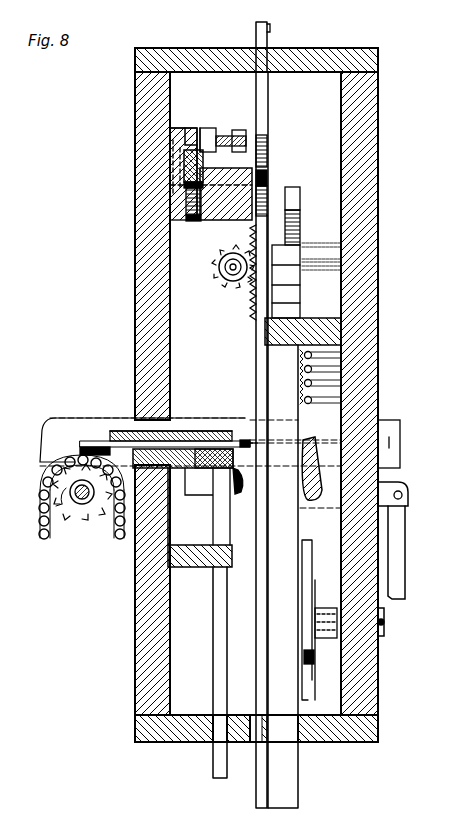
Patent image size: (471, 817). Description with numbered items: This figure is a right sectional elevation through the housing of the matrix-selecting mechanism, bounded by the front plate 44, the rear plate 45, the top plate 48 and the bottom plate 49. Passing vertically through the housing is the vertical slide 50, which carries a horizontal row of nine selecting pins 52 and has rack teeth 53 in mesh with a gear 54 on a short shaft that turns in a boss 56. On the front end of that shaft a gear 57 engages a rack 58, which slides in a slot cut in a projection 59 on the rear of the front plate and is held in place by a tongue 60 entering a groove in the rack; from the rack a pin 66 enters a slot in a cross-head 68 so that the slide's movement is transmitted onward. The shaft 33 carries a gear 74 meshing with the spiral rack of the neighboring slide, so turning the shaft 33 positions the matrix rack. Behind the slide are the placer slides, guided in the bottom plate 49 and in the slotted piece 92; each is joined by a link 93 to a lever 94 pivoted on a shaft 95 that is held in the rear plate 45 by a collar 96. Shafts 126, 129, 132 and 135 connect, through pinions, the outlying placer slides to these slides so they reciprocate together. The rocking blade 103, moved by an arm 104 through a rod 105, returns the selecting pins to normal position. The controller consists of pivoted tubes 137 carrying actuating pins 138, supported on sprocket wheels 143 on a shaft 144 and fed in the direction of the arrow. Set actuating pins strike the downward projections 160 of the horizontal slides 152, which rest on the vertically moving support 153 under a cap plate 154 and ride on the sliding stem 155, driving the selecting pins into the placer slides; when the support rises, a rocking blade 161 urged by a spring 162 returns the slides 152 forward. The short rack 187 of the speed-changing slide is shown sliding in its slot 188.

The top plate 48 is at (294, 50).
The front plate 44 is at (140, 642).
The rear plate 45 is at (368, 232).
The bottom plate 49 is at (178, 742).
The vertical slide 50 is at (272, 110).
The rack teeth 53 is at (270, 158).
The gear 54 is at (270, 186).
The projection 59 is at (184, 126).
The tongue 60 is at (172, 150).
The rack 58 is at (184, 165).
The gear 57 is at (185, 205).
The pin 66 is at (213, 134).
The cross-head 68 is at (244, 136).
The boss 56 is at (212, 220).
The shaft 33 is at (230, 268).
The gear 74 is at (228, 287).
The slot 188 is at (298, 196).
The short rack 187 is at (300, 226).
The slotted piece 92 is at (310, 332).
The shaft 132 is at (345, 357).
The shaft 126 is at (345, 370).
The shaft 135 is at (345, 384).
The shaft 129 is at (345, 400).
The rocking blade 103 is at (310, 455).
The link 93 is at (318, 640).
The lever 94 is at (308, 660).
The horizontal slides 152 is at (98, 438).
The cap plate 154 is at (198, 432).
The selecting pins 52 is at (247, 440).
The downward projections 160 is at (84, 447).
The vertically moving support 153 is at (172, 474).
The spring 162 is at (206, 470).
The rocking blade 161 is at (242, 496).
The vertically sliding stem 155 is at (214, 592).
The sprocket wheels 143 is at (86, 505).
The shaft 144 is at (78, 502).
The actuating pins 138 is at (45, 484).
The tubes 137 is at (44, 540).
The arm 104 is at (395, 485).
The rod 105 is at (408, 516).
The collar 96 is at (386, 610).
The shaft 95 is at (386, 623).